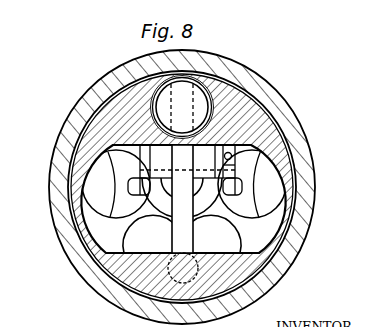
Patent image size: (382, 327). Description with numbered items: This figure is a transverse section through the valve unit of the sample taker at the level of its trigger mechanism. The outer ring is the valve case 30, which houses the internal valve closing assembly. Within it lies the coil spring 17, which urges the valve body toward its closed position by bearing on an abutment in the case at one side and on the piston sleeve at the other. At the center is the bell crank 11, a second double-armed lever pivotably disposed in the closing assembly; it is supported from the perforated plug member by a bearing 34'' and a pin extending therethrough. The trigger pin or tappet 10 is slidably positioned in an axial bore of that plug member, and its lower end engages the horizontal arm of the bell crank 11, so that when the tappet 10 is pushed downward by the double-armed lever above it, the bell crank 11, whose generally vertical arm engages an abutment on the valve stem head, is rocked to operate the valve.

The valve case 30 is at (65, 225).
The trigger pin or tappet 10 is at (127, 288).
The coil spring 17 is at (90, 183).
The bearing 34'' is at (171, 170).
The bell crank 11 is at (180, 238).